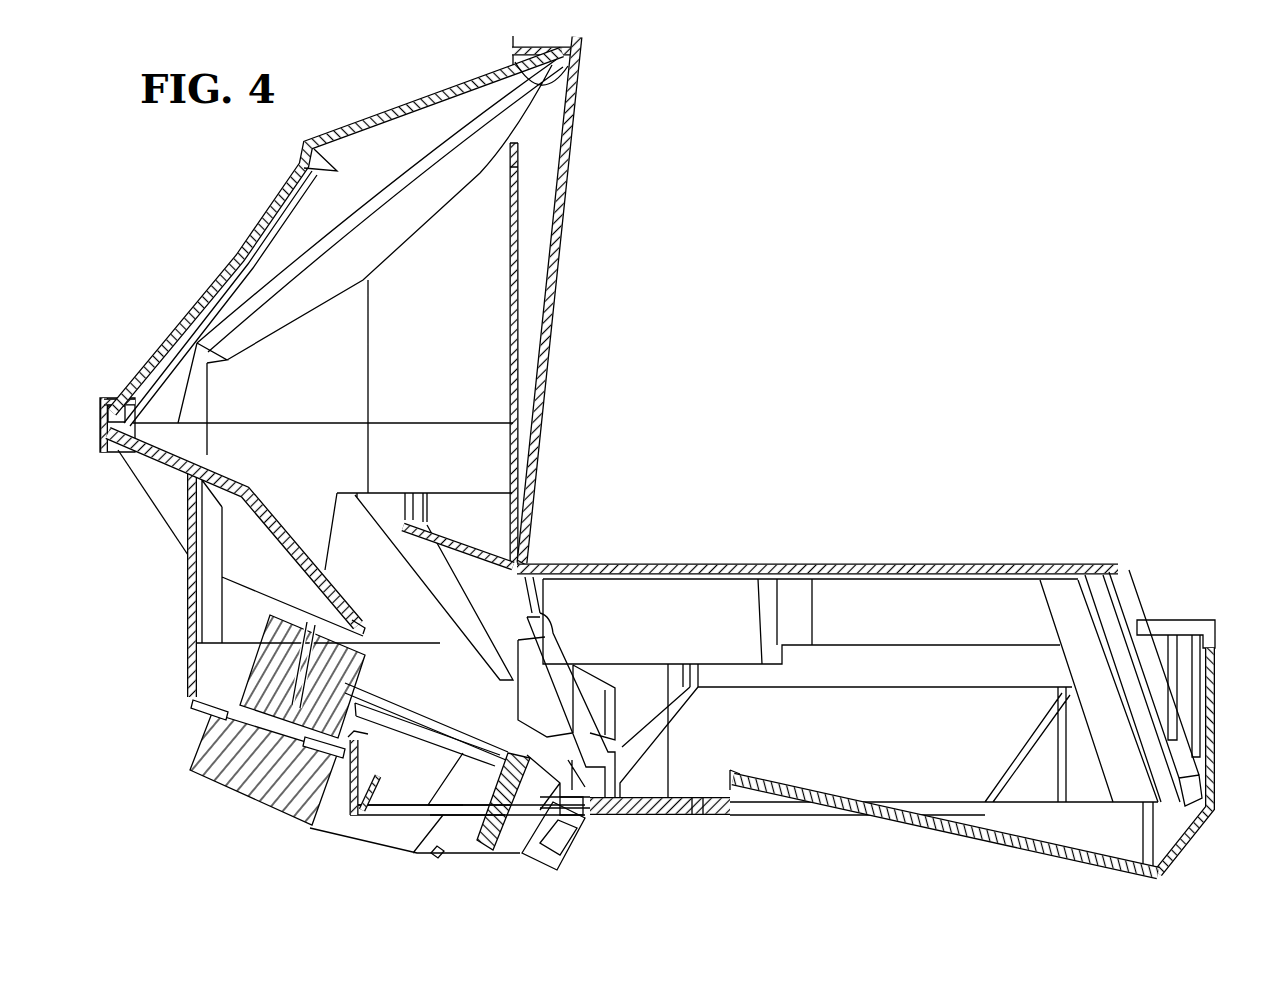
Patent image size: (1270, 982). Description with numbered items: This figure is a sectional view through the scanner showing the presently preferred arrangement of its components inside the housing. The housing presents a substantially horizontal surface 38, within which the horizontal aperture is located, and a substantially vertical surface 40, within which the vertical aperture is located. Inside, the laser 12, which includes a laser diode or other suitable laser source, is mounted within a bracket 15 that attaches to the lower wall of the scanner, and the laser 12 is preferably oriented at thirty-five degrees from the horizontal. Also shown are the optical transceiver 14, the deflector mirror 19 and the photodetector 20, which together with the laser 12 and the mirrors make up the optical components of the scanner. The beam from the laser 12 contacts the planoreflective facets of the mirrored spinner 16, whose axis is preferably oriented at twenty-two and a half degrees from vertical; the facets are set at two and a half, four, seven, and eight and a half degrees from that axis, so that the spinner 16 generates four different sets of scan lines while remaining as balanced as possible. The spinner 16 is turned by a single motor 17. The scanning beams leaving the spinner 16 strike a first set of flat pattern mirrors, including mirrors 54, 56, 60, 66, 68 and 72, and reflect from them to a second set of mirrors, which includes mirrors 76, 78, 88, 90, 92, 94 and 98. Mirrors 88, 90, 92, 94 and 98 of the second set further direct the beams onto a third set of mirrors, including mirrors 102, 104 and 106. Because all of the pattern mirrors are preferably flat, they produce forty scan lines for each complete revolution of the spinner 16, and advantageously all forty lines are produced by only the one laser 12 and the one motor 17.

The laser 12 is at (575, 856).
The optical transceiver 14 is at (484, 843).
The bracket 15 is at (582, 815).
The mirrored spinner 16 is at (367, 655).
The motor 17 is at (248, 797).
The deflector mirror 19 is at (367, 822).
The photodetector 20 is at (438, 860).
The substantially horizontal surface 38 is at (893, 564).
The substantially vertical surface 40 is at (571, 209).
The first set mirror 54 is at (1098, 600).
The first set mirror 56 is at (1062, 595).
The first set mirror 60 is at (666, 600).
The first set mirror 66 is at (523, 624).
The first set mirror 68 is at (553, 719).
The first set mirror 72 is at (527, 565).
The second set mirror 76 is at (1047, 828).
The second set mirror 78 is at (872, 742).
The second set mirror 88 is at (486, 793).
The second set mirror 90 is at (421, 781).
The second set mirror 92 is at (383, 720).
The second set mirror 94 is at (447, 727).
The second set mirror 98 is at (270, 493).
The third set mirror 102 is at (303, 220).
The third set mirror 104 is at (542, 76).
The third set mirror 106 is at (420, 222).